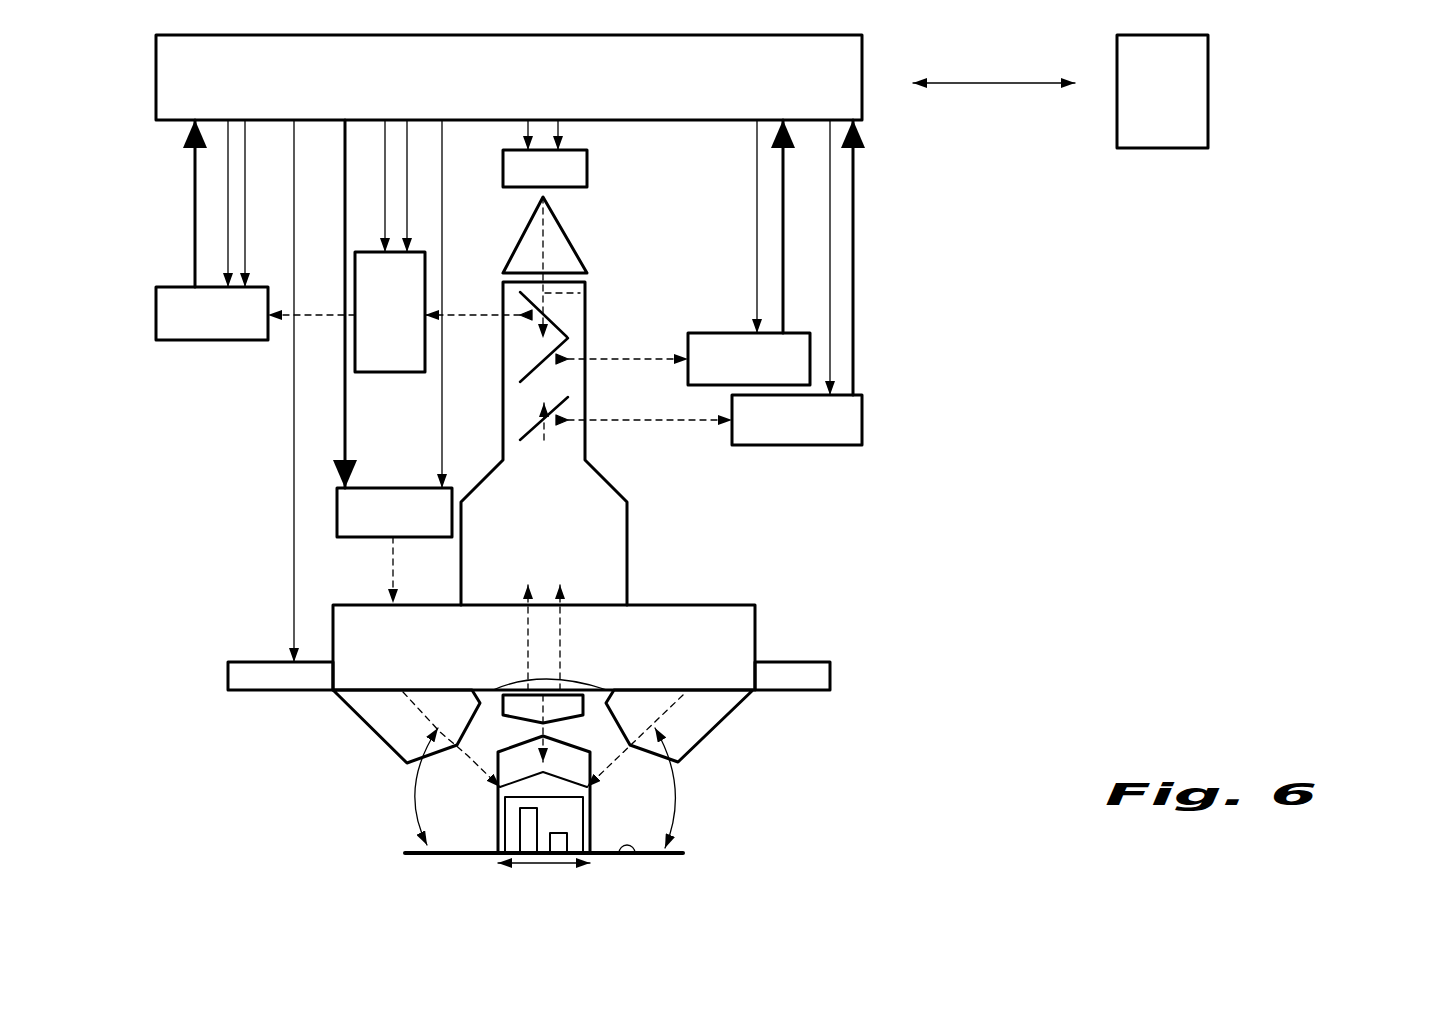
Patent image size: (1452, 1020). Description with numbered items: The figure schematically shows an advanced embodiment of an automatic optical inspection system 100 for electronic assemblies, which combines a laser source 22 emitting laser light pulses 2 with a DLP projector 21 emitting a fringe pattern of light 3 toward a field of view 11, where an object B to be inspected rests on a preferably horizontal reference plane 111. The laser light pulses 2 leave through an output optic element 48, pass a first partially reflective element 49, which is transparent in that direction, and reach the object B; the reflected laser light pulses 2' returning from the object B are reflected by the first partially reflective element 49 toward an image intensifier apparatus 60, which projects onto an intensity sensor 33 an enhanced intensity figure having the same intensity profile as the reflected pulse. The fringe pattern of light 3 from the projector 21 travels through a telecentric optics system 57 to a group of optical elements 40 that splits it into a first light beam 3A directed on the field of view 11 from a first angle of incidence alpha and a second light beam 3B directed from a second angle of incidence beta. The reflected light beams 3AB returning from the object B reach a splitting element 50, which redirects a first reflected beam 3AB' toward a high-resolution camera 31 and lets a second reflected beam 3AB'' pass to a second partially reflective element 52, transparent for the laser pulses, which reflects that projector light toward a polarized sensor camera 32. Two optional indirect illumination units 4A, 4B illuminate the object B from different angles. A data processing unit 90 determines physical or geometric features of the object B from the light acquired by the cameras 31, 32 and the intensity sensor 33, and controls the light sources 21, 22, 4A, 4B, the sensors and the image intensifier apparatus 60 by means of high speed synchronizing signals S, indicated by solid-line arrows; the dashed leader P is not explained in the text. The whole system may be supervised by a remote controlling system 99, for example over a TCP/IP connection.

The data processing unit 90 is at (205, 68).
The remote controlling system 99 is at (1163, 90).
The automatic optical inspection system 100 is at (1350, 167).
The high speed synchronizing signals S is at (383, 147).
The laser source 22 is at (558, 170).
The output optic element of the laser source 48 is at (567, 222).
The laser light pulses 2 is at (572, 517).
The reflected laser light pulses 2' is at (479, 432).
The first partially reflective element 49 is at (553, 322).
The second partially reflective element 52 is at (555, 362).
The splitting element 50 is at (527, 437).
The image intensifier apparatus 60 is at (390, 348).
The intensity sensor 33 is at (217, 310).
The parameter signal P is at (318, 318).
The DLP projector 21 is at (375, 510).
The fringe pattern of light 3 is at (393, 565).
The polarized sensor camera 32 is at (770, 350).
The high-resolution camera 31 is at (820, 410).
The second reflected beam 3AB'' is at (666, 364).
The first reflected beam 3AB' is at (662, 481).
The telecentric optics system 57 is at (607, 590).
The reflected light beams 3AB is at (615, 637).
The indirect illumination unit 4A is at (228, 672).
The indirect illumination unit 4B is at (830, 673).
The group of optical elements 40 is at (449, 668).
The first light beam 3A is at (620, 758).
The second light beam 3B is at (467, 755).
The first angle of incidence alpha is at (679, 788).
The second angle of incidence beta is at (428, 786).
The field of view 11 is at (483, 832).
The object to be inspected B is at (527, 830).
The reference plane 111 is at (617, 853).